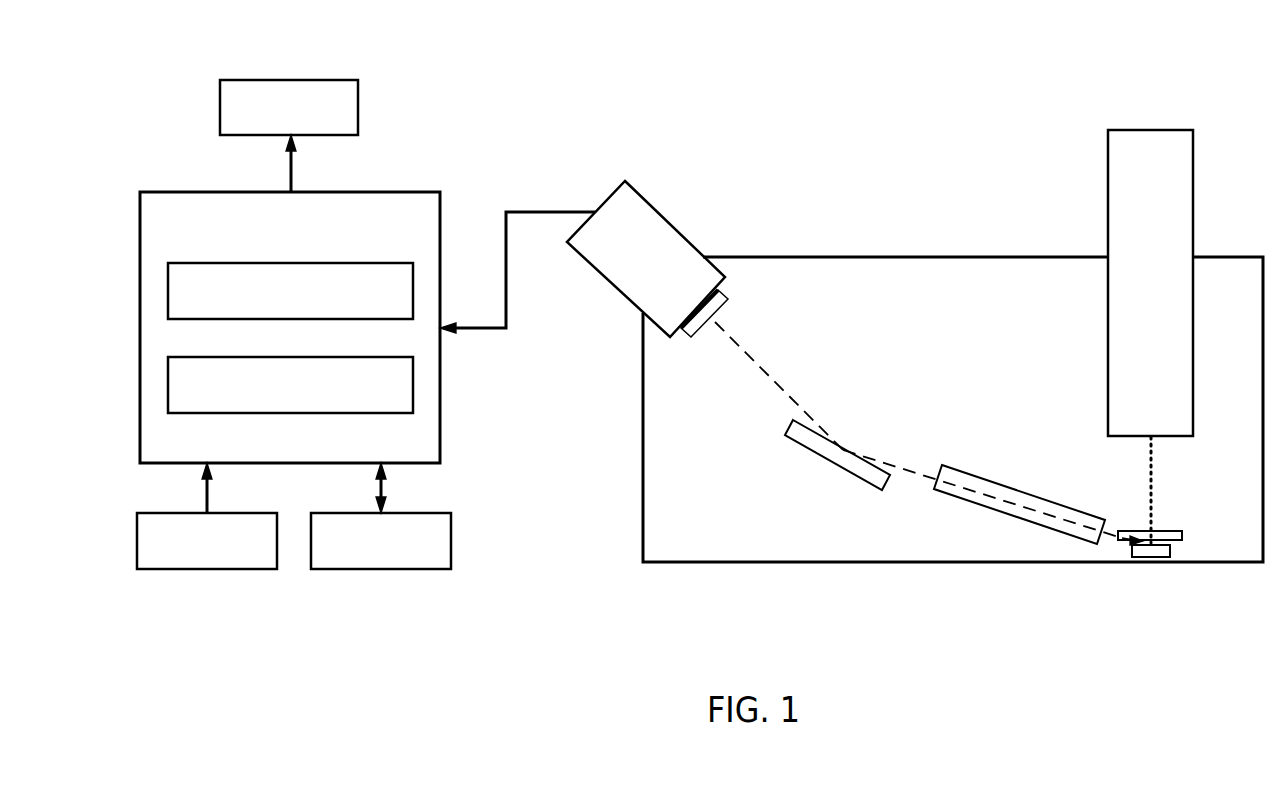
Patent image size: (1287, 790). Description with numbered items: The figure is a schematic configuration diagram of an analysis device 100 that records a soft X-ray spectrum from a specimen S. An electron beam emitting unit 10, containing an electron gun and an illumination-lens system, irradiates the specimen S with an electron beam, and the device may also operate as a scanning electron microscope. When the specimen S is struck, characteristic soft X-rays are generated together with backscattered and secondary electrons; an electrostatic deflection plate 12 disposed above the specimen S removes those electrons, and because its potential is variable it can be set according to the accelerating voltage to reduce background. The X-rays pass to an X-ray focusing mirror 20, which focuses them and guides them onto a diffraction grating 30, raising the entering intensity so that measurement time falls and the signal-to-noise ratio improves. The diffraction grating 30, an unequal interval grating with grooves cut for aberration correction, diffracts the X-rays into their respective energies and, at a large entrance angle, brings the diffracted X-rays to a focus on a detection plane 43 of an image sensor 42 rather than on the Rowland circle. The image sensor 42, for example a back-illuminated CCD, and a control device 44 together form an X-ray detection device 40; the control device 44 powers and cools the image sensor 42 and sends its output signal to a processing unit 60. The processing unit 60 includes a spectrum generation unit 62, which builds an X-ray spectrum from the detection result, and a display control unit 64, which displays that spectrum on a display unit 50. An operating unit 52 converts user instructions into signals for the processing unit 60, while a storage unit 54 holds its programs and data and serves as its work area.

The analysis device 100 is at (1177, 57).
The electron beam emitting unit 10 is at (1184, 203).
The electrostatic deflection plate 12 is at (1178, 541).
The specimen S is at (1160, 558).
The X-ray focusing mirror 20 is at (1030, 517).
The diffraction grating 30 is at (840, 458).
The X-ray detection device 40 is at (653, 240).
The image sensor 42 is at (717, 289).
The detection plane 43 is at (722, 302).
The control device 44 is at (655, 235).
The display unit 50 is at (358, 110).
The operating unit 52 is at (207, 569).
The storage unit 54 is at (377, 569).
The processing unit 60 is at (400, 192).
The spectrum generation unit 62 is at (370, 263).
The display control unit 64 is at (370, 357).